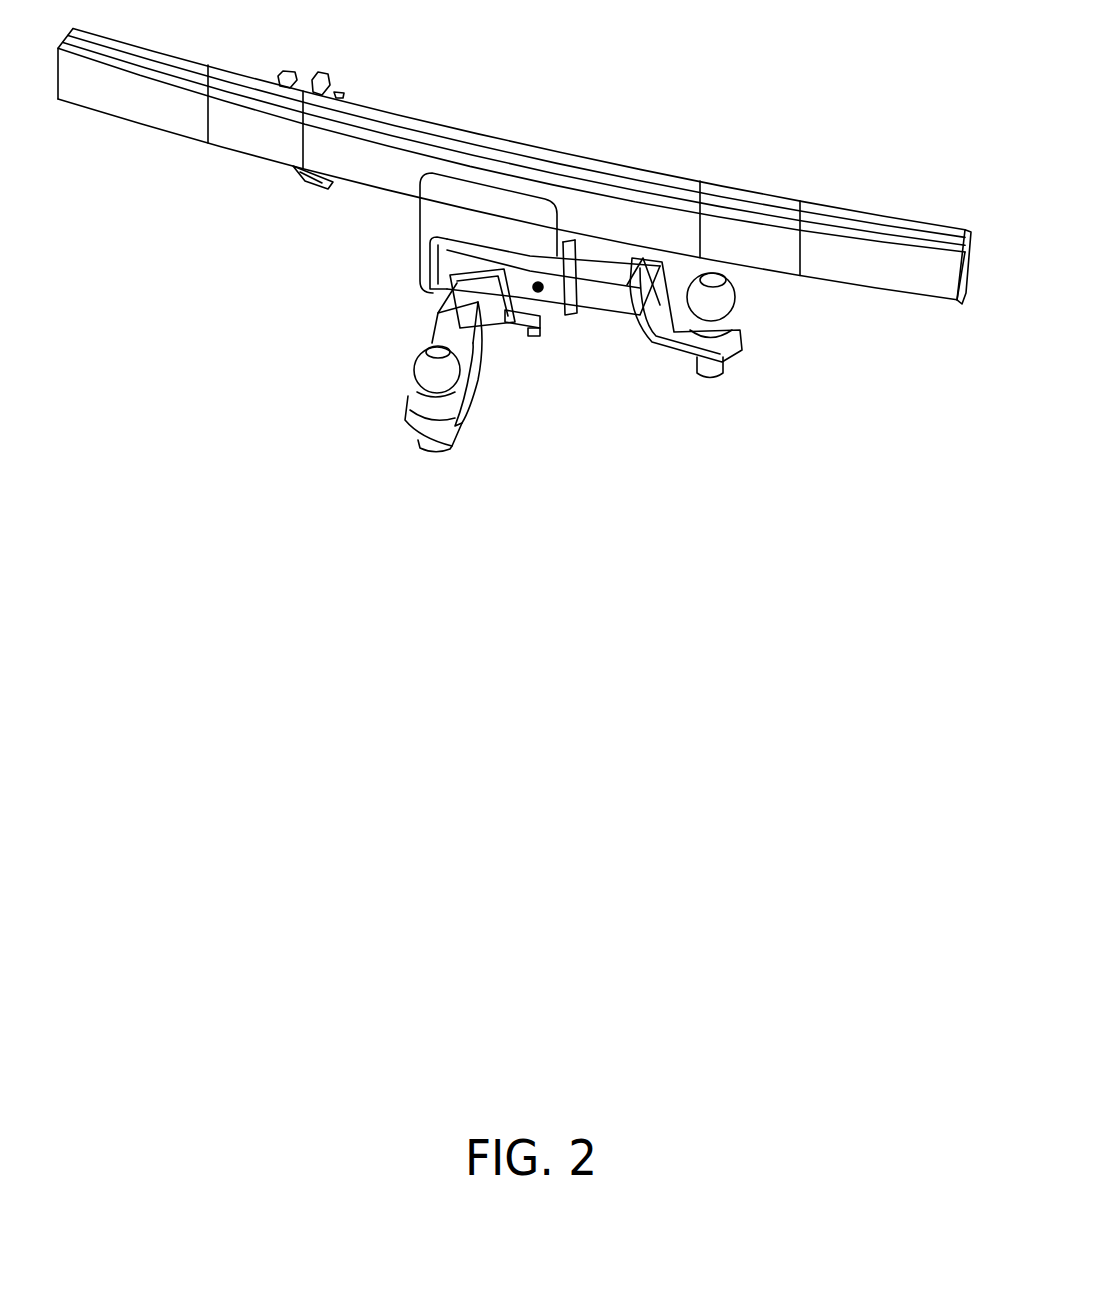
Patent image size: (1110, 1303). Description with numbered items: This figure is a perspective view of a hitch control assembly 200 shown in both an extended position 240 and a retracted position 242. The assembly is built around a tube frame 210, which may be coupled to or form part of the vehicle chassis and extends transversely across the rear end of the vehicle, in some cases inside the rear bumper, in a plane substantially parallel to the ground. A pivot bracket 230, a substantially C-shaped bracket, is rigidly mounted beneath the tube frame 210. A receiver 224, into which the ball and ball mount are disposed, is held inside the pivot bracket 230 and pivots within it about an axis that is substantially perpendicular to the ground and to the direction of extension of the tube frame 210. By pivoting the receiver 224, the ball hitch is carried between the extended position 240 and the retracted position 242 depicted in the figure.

The hitch control assembly 200 is at (811, 808).
The tube frame 210 is at (514, 166).
The receiver 224 is at (456, 307).
The pivot bracket 230 is at (463, 219).
The extended position 240 is at (498, 406).
The retracted position 242 is at (688, 384).